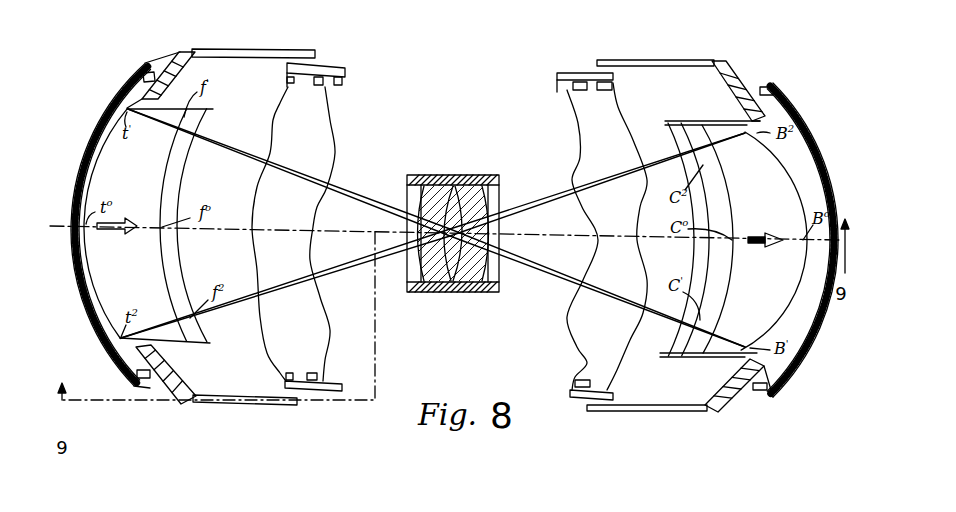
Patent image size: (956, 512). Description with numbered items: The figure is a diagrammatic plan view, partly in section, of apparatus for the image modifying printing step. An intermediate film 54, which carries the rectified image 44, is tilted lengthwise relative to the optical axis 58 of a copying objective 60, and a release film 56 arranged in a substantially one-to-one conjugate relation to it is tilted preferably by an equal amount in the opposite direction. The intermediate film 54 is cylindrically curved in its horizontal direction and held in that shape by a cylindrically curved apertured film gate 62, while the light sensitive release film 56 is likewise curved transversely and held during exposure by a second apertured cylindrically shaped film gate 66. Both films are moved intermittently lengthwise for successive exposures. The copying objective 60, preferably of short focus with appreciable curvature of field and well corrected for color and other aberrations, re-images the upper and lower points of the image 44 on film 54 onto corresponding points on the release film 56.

The image 44 is at (112, 288).
The intermediate film 54 is at (322, 101).
The release film 56 is at (592, 339).
The optical axis 58 is at (300, 232).
The copying objective 60 is at (447, 175).
The cylindrically curved apertured film gate 62 is at (270, 67).
The second apertured cylindrically shaped film gate 66 is at (638, 398).